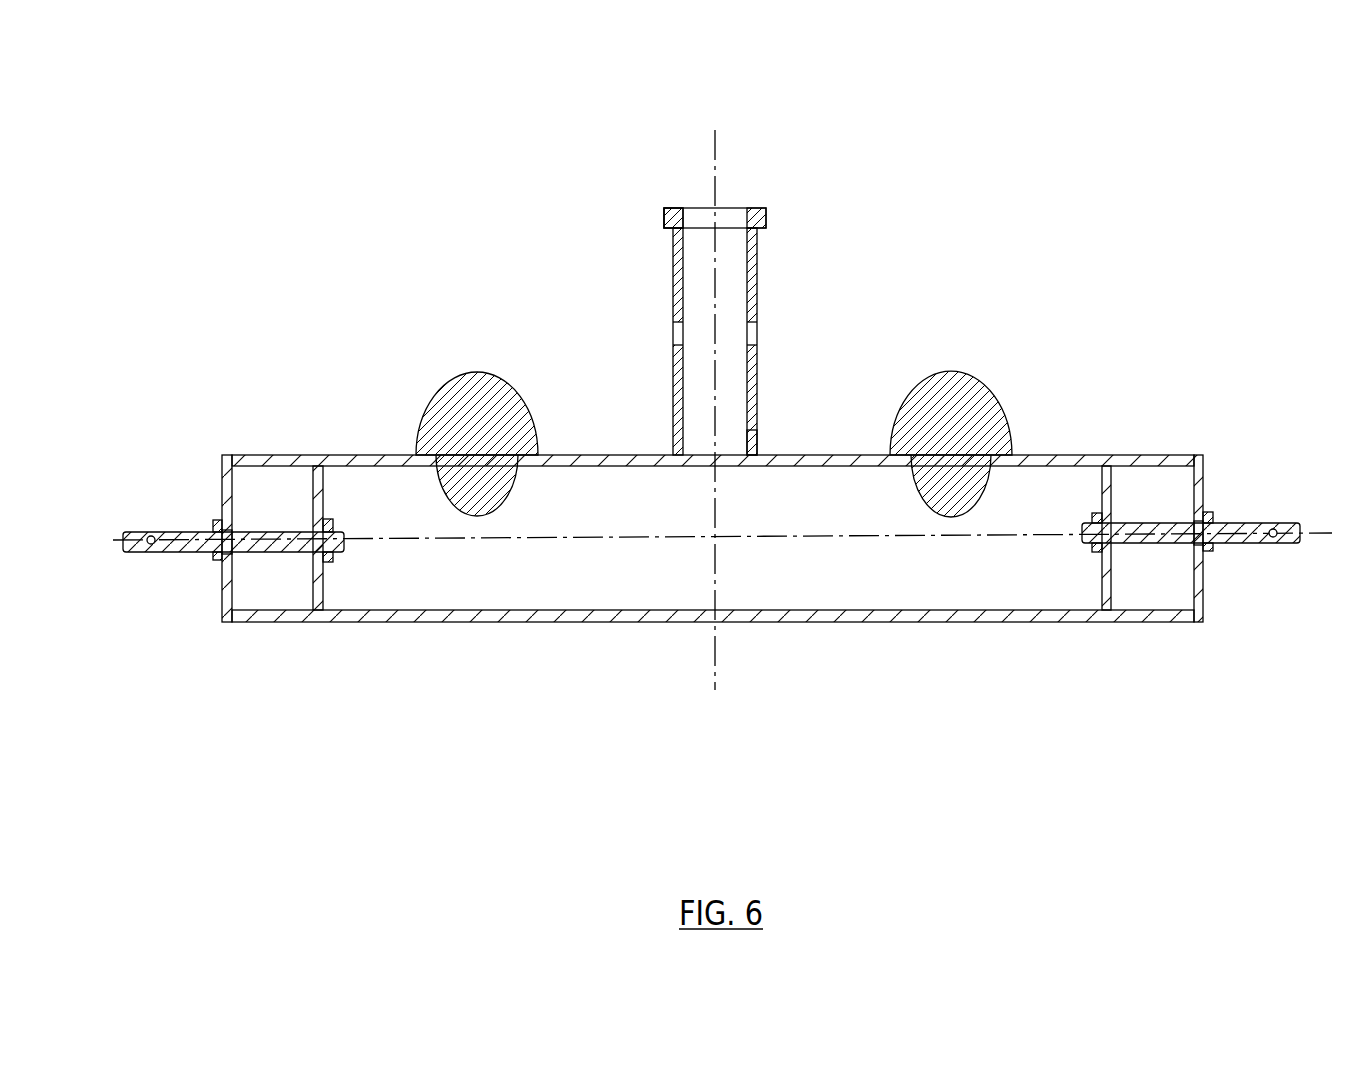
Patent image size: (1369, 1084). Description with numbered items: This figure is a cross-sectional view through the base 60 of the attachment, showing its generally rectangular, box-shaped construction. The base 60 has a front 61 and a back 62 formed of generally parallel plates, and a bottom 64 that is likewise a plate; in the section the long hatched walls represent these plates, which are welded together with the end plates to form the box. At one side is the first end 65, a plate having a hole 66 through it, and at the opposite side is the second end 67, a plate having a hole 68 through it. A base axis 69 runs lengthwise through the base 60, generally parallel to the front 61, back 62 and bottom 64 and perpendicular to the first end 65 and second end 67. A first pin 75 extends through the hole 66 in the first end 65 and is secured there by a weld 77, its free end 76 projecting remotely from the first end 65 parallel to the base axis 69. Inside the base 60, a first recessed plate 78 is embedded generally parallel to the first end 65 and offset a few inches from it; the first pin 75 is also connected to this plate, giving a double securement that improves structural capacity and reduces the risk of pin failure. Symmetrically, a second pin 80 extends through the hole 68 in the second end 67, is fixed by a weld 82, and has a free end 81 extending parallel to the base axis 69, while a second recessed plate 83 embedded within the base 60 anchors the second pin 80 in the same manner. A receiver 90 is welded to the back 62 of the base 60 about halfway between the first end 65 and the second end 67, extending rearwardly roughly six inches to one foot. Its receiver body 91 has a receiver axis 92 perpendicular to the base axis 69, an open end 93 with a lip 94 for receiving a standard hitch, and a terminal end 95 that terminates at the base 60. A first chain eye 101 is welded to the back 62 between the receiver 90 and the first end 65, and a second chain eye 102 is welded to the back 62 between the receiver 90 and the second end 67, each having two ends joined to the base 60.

The base 60 is at (718, 565).
The front 61 is at (503, 622).
The back 62 is at (608, 455).
The bottom 64 is at (866, 489).
The first end 65 is at (1204, 480).
The hole 66 is at (1195, 522).
The second end 67 is at (222, 488).
The hole 68 is at (232, 528).
The base axis 69 is at (1320, 536).
The first pin 75 is at (1183, 554).
The free end 76 is at (1302, 527).
The weld 77 is at (1097, 552).
The first recessed plate 78 is at (1101, 496).
The second pin 80 is at (204, 560).
The free end 81 is at (123, 536).
The weld 82 is at (217, 558).
The second recessed plate 83 is at (323, 490).
The receiver 90 is at (709, 386).
The receiver body 91 is at (758, 302).
The receiver axis 92 is at (717, 147).
The open end 93 is at (733, 207).
The lip 94 is at (664, 217).
The terminal end 95 is at (757, 453).
The first chain eye 101 is at (977, 377).
The second chain eye 102 is at (477, 373).